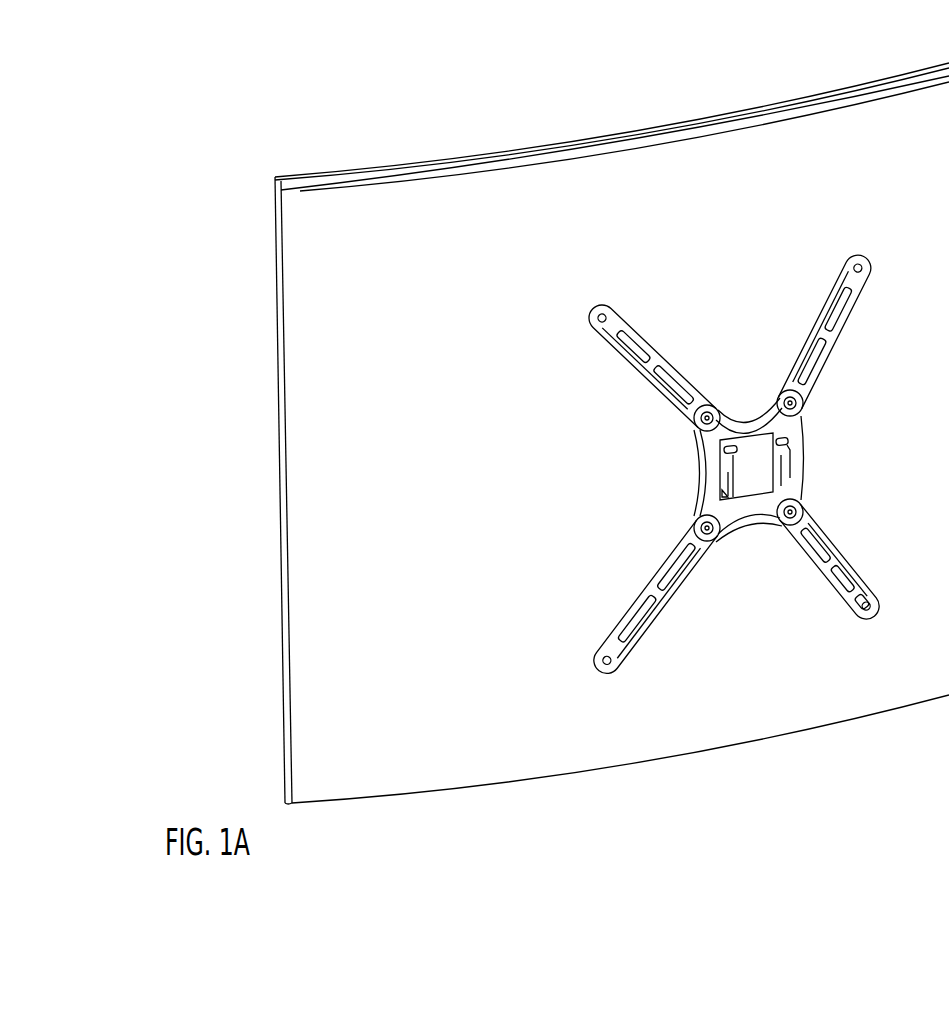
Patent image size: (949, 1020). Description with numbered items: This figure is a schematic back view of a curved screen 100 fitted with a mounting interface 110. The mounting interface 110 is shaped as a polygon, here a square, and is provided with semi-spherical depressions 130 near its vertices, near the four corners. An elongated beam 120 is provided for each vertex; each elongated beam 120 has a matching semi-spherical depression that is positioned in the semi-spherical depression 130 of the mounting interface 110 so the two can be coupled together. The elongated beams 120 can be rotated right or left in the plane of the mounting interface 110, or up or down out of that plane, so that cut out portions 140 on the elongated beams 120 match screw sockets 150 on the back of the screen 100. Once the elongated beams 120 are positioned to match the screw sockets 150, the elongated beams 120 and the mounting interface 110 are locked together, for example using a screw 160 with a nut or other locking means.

The curved screen 100 is at (236, 164).
The mounting interface 110 is at (750, 395).
The elongated beam 120 is at (840, 283).
The semi-spherical depression 130 is at (803, 403).
The cut out portion 140 is at (828, 552).
The screw socket 150 is at (862, 620).
The screw 160 is at (710, 541).